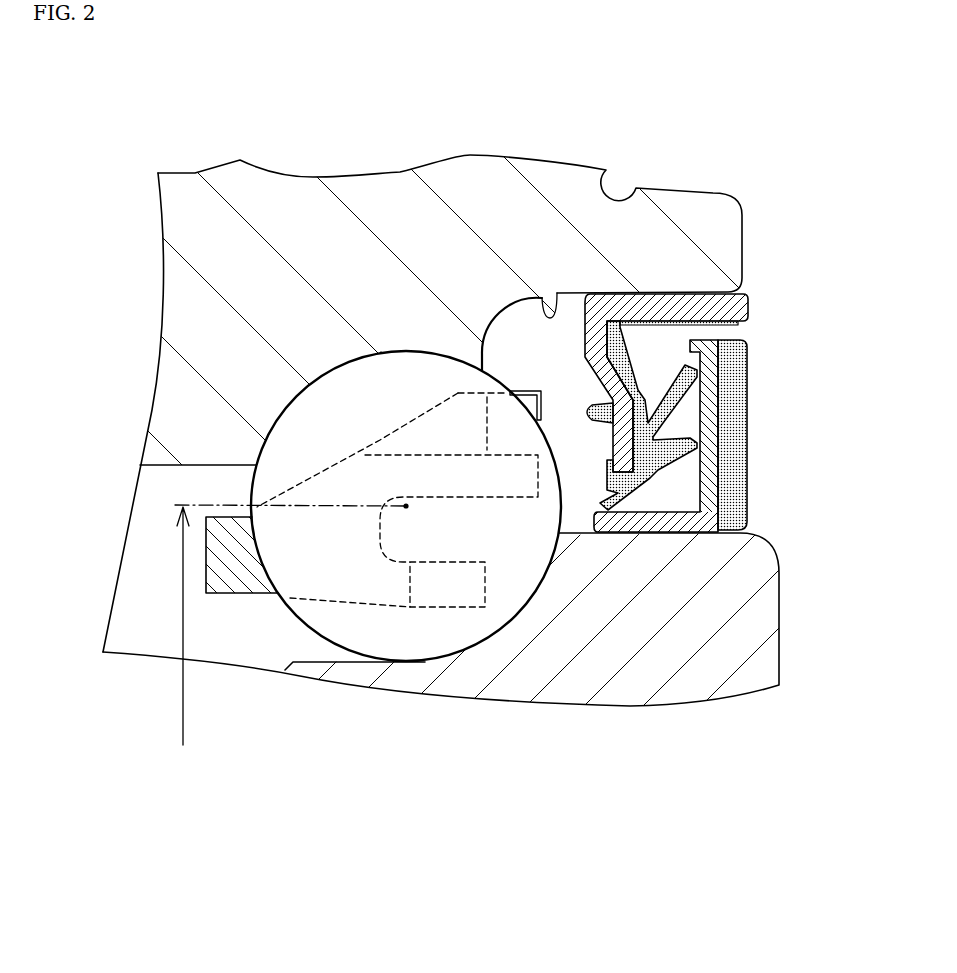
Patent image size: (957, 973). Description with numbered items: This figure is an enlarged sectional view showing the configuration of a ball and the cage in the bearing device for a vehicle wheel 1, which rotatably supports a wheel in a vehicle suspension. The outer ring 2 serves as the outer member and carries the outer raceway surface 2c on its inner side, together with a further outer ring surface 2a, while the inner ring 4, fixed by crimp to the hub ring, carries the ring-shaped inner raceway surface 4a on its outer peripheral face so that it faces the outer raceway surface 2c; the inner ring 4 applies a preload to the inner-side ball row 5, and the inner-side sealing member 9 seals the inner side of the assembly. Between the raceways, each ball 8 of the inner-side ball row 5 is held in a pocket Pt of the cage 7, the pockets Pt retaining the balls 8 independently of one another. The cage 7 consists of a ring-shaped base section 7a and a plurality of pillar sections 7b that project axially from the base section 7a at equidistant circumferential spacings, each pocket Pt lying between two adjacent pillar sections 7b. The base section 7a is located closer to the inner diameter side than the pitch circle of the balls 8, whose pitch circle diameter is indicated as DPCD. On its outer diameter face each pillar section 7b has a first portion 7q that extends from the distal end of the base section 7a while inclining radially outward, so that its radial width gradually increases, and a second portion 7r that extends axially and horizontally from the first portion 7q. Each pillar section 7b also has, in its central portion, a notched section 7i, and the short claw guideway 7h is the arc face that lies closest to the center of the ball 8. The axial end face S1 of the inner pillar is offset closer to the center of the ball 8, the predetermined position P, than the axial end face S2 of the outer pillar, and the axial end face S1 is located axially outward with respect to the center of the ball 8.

The bearing device for a vehicle wheel 1 is at (106, 121).
The outer ring 2 is at (423, 111).
The outer raceway surface 2a is at (541, 296).
The outer raceway surface 2c is at (403, 352).
The inner ring 4 is at (507, 749).
The inner raceway surface 4a is at (485, 636).
The inner-side ball row 5 is at (328, 471).
The cage 7 is at (318, 452).
The base section 7a is at (239, 586).
The pillar section 7b is at (393, 607).
The short claw guideway 7h is at (380, 440).
The notched section 7i is at (452, 607).
The first portion 7q is at (338, 465).
The second portion 7r is at (514, 391).
The ball 8 is at (395, 648).
The inner-side sealing member 9 is at (744, 399).
The predetermined position P is at (408, 508).
The pocket Pt is at (365, 552).
The axial end face of the inner pillar S1 is at (487, 587).
The axial end face of the outer pillar S2 is at (543, 413).
The pitch circle diameter DPCD is at (160, 628).